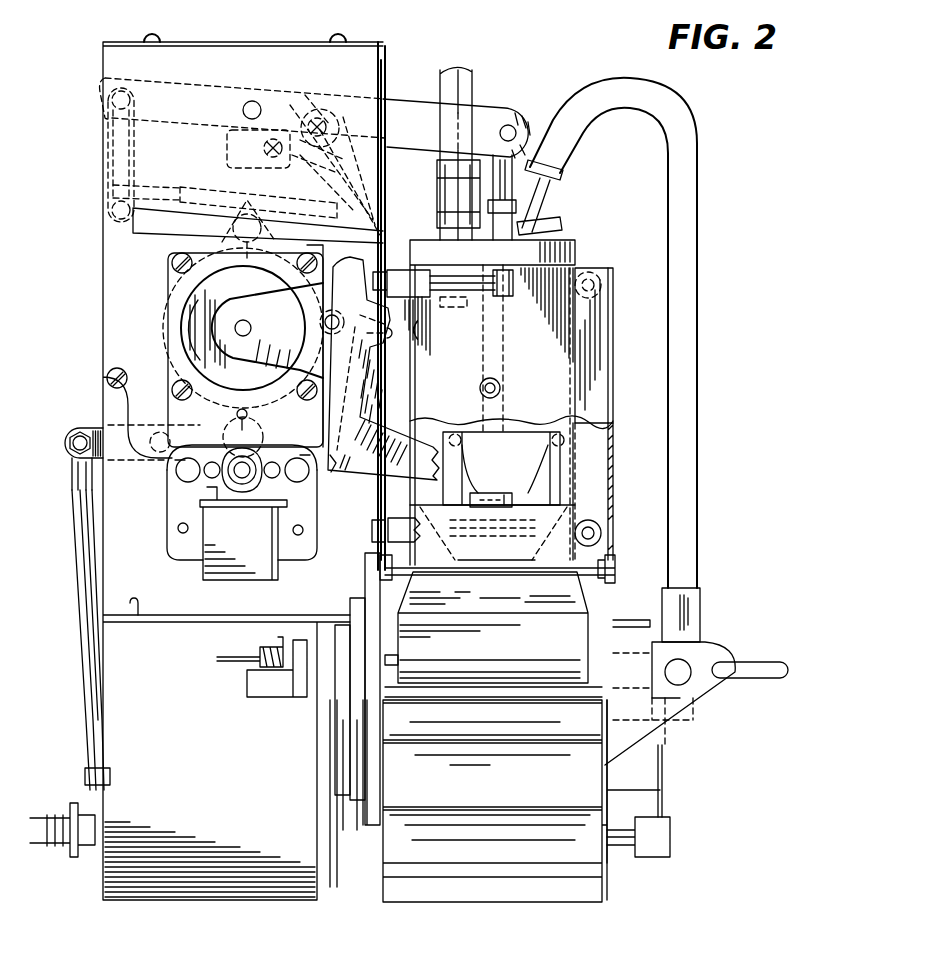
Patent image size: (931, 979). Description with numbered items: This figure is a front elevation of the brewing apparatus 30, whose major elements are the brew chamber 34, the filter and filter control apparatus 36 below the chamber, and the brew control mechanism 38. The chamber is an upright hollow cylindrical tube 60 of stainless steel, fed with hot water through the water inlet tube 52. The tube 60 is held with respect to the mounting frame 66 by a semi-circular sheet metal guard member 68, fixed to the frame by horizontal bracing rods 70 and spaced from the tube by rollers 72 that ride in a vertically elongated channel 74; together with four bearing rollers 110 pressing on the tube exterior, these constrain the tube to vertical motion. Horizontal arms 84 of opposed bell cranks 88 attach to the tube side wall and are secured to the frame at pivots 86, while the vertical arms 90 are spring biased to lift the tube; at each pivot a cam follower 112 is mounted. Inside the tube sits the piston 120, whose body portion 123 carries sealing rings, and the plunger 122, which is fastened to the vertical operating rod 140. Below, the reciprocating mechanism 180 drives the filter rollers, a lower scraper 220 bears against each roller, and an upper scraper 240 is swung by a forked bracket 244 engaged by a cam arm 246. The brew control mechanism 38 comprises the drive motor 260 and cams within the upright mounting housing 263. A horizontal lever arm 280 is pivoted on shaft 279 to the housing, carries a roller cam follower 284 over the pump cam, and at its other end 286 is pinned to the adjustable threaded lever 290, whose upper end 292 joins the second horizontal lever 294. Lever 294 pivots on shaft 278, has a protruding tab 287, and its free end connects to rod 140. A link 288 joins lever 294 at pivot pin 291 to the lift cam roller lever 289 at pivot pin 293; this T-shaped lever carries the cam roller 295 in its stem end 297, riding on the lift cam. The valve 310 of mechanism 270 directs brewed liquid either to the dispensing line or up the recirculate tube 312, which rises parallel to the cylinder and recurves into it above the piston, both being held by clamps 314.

The apparatus 30 is at (632, 228).
The brew chamber 34 is at (572, 566).
The filter and filter control apparatus 36 is at (642, 798).
The brew control mechanism 38 is at (70, 336).
The water inlet tube 52 is at (468, 85).
The cylindrical tube 60 is at (572, 258).
The mounting frame 66 is at (272, 42).
The guard member 68 is at (605, 357).
The bracing rods 70 is at (420, 314).
The rollers 72 is at (601, 282).
The channel 74 is at (598, 398).
The horizontal arms 84 is at (412, 465).
The pivots 86 is at (347, 459).
The bell cranks 88 is at (360, 400).
The vertical arms 90 is at (385, 270).
The bearing rollers 110 is at (440, 272).
The cam follower 112 is at (332, 313).
The piston 120 is at (532, 508).
The plunger 122 is at (491, 497).
The body portion 123 is at (567, 558).
The operating rod 140 is at (502, 388).
The reciprocating mechanism 180 is at (348, 632).
The lower scraper 220 is at (512, 803).
The upper scraper 240 is at (518, 607).
The bracket 244 is at (362, 567).
The cam arm 246 is at (350, 592).
The drive motor 260 is at (170, 490).
The mounting housing 263 is at (133, 532).
The mechanism 270 is at (660, 805).
The shaft 278 is at (258, 100).
The shaft 279 is at (370, 225).
The lever arm 280 is at (178, 190).
The roller cam follower 284 is at (250, 197).
The other end 286 is at (108, 210).
The protruding tab 287 is at (228, 148).
The link 288 is at (284, 128).
The lift cam roller lever 289 is at (365, 182).
The adjustable threaded lever 290 is at (110, 167).
The pivot pin 291 is at (335, 148).
The upper end 292 is at (108, 103).
The pivot pin 293 is at (325, 115).
The second horizontal lever 294 is at (438, 140).
The cam roller 295 is at (244, 262).
The stem end 297 is at (225, 215).
The valve 310 is at (702, 700).
The recirculate tube 312 is at (693, 342).
The clamps 314 is at (760, 667).